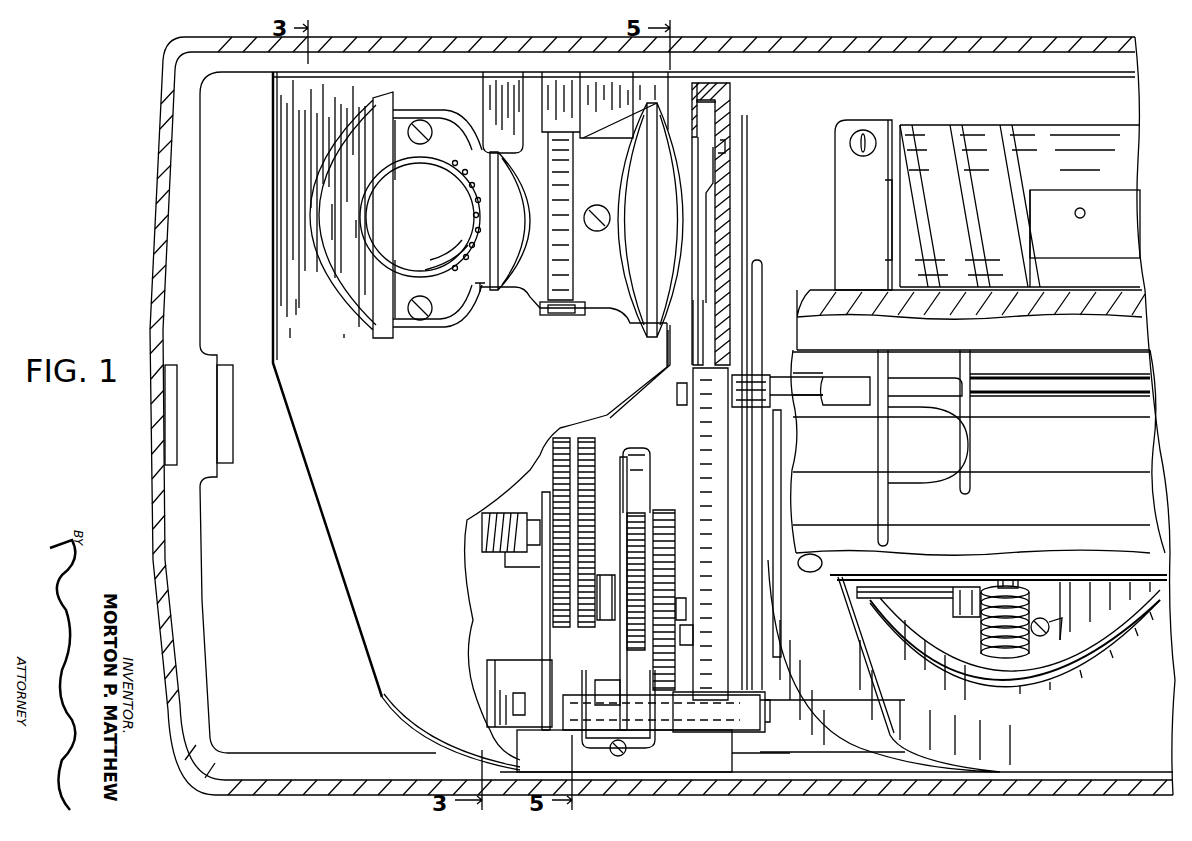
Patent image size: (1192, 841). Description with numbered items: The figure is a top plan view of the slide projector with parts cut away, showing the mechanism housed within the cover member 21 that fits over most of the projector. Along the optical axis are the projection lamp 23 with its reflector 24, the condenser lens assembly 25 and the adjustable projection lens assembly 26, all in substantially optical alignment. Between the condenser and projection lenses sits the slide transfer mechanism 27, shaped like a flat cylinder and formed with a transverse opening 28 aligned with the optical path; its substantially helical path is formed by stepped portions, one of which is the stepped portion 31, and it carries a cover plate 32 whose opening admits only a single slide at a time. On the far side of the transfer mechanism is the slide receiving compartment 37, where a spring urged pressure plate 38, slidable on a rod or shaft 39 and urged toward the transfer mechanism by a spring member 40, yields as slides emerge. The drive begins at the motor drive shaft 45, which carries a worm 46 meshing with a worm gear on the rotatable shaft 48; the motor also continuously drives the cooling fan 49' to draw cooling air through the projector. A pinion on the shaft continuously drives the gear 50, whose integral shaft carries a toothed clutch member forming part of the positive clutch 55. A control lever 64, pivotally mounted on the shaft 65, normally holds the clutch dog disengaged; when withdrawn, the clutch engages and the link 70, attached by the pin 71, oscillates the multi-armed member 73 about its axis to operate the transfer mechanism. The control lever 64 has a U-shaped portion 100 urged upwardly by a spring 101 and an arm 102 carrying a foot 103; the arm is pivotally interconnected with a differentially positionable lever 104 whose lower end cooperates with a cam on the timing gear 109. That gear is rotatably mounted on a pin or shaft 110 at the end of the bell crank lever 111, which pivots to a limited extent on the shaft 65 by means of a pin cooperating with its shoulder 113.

The cover member 21 is at (150, 262).
The projection lamp 23 is at (432, 220).
The reflector 24 is at (362, 318).
The condenser lens assembly 25 is at (586, 333).
The projection lens assembly 26 is at (1008, 118).
The slide transfer mechanism 27 is at (745, 113).
The transverse opening 28 is at (720, 148).
The stepped portion 31 is at (702, 102).
The cover plate 32 is at (693, 335).
The slide receiving compartment 37 is at (1062, 457).
The pressure plate 38 is at (878, 445).
The rod or shaft 39 is at (1055, 392).
The spring member 40 is at (858, 400).
The drive shaft 45 is at (1004, 588).
The worm 46 is at (990, 637).
The rotatable shaft 48 is at (890, 602).
The cooling fan 49' is at (1015, 624).
The gear 50 is at (635, 513).
The positive clutch 55 is at (666, 513).
The control lever 64 is at (665, 668).
The shaft 65 is at (762, 706).
The link 70 is at (685, 530).
The pin 71 is at (690, 635).
The multi-armed member 73 is at (720, 279).
The U-shaped portion 100 is at (587, 747).
The spring 101 is at (627, 750).
The arm 102 is at (580, 673).
The foot 103 is at (597, 692).
The differentially positionable lever 104 is at (578, 640).
The timing gear 109 is at (553, 478).
The pin or shaft 110 is at (482, 530).
The bell crank lever 111 is at (553, 597).
The shoulder 113 is at (508, 690).